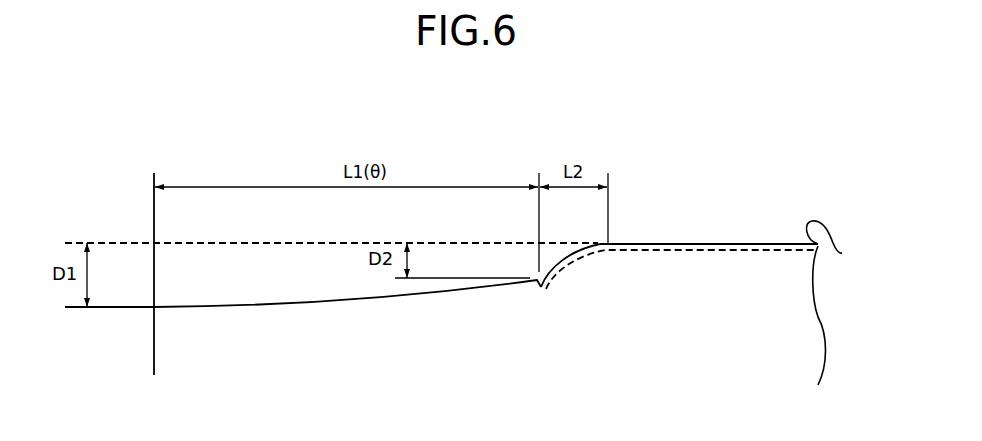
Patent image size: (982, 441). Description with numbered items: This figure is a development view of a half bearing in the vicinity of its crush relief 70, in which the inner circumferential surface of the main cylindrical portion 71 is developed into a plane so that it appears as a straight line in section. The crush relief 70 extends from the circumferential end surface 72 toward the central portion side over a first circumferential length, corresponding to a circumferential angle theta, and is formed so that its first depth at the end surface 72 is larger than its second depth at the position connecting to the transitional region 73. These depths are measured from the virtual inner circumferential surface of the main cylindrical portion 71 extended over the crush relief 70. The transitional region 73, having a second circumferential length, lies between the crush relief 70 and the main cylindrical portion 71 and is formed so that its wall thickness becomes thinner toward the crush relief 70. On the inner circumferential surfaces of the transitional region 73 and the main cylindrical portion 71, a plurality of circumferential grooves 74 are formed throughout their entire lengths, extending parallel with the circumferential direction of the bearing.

The crush relief 70 is at (373, 145).
The main cylindrical portion 71 is at (842, 253).
The end surface 72 is at (154, 352).
The transitional region 73 is at (561, 258).
The circumferential grooves 74 is at (568, 268).